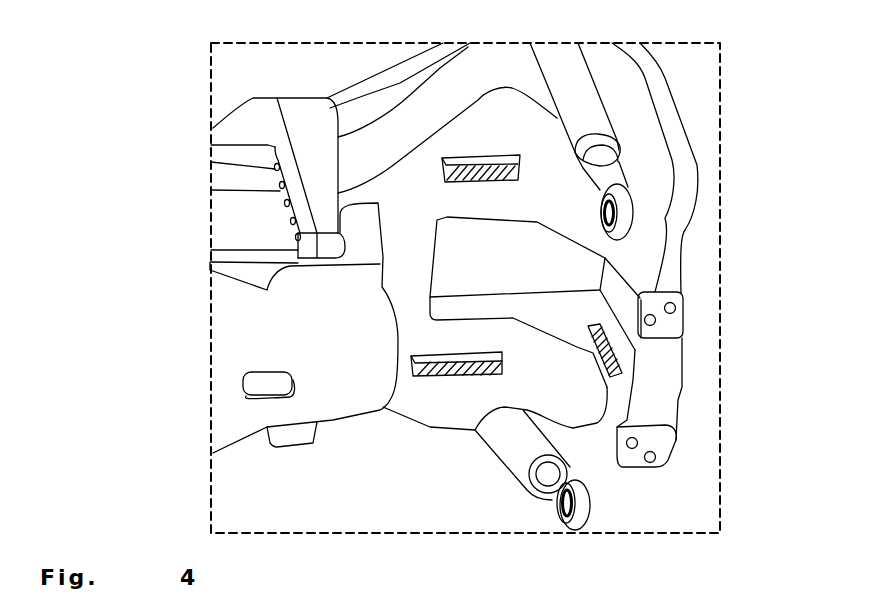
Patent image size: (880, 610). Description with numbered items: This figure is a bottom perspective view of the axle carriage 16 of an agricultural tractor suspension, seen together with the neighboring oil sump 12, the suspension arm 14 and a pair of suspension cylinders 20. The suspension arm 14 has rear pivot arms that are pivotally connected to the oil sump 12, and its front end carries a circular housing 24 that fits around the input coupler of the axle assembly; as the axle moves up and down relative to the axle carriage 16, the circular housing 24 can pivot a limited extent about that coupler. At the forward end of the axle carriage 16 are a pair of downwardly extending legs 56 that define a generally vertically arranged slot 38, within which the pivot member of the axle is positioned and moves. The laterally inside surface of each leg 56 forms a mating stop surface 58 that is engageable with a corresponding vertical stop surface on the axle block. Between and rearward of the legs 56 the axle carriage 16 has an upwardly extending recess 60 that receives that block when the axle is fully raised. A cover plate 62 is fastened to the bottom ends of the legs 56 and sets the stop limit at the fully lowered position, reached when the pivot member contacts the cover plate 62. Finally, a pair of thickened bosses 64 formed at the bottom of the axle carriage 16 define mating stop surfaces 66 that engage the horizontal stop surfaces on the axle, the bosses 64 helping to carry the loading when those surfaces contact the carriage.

The oil sump 12 is at (251, 98).
The suspension arm 14 is at (251, 447).
The axle carriage 16 is at (680, 113).
The suspension cylinders 20 is at (598, 98).
The circular housing 24 is at (348, 420).
The slot 38 is at (614, 416).
The legs 56 is at (684, 280).
The mating stop surface 58 is at (593, 345).
The recess 60 is at (510, 270).
The cover plate 62 is at (675, 382).
The bosses 64 is at (470, 158).
The mating stop surfaces 66 is at (503, 173).